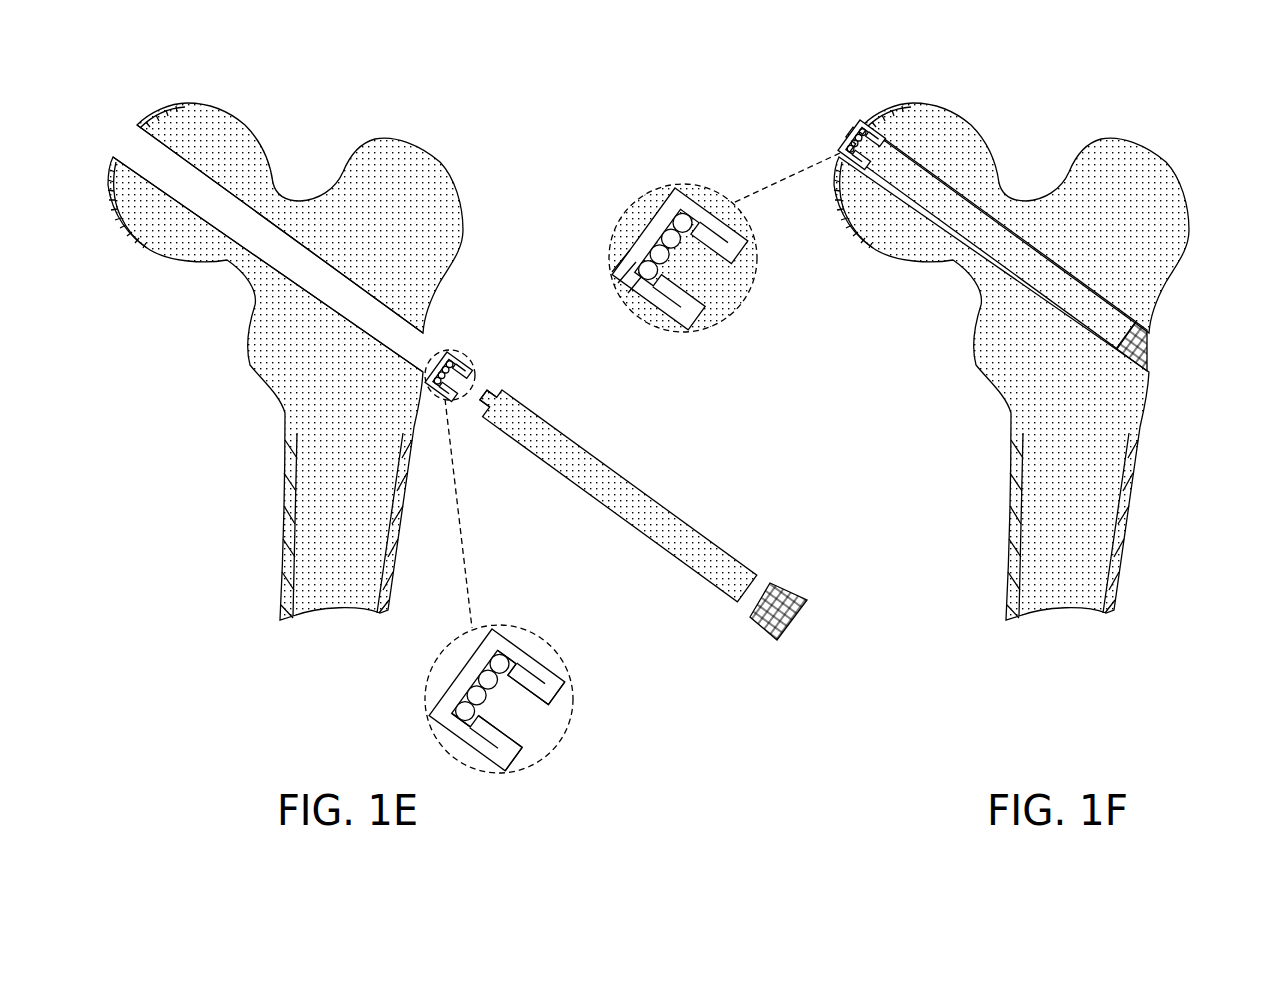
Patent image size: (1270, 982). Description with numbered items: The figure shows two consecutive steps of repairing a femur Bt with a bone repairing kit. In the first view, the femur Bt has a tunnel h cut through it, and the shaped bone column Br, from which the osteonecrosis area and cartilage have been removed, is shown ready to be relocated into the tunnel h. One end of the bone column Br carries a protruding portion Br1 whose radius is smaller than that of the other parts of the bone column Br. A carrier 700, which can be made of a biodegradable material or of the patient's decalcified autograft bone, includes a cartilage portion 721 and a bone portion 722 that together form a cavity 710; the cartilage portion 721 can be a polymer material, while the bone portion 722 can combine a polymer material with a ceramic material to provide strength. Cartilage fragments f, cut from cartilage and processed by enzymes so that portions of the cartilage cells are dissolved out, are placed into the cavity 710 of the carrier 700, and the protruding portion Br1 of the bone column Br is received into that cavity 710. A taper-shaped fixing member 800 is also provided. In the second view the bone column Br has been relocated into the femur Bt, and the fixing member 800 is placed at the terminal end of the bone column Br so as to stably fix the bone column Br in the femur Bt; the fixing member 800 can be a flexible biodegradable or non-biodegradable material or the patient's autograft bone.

In FIG. 1E, the femur Bt is at (420, 133).
In FIG. 1F, the femur Bt is at (1138, 132).
In FIG. 1E, the tunnel h is at (143, 150).
In FIG. 1E, the bone column Br is at (595, 467).
In FIG. 1F, the bone column Br is at (997, 247).
In FIG. 1E, the protruding portion Br1 is at (489, 394).
In FIG. 1E, the fixing member 800 is at (783, 590).
In FIG. 1F, the fixing member 800 is at (1142, 347).
In FIG. 1E, the carrier 700 is at (642, 595).
In FIG. 1F, the carrier 700 is at (840, 133).
In FIG. 1E, the cavity 710 is at (527, 712).
In FIG. 1E, the cartilage portion 721 is at (529, 657).
In FIG. 1E, the bone portion 722 is at (548, 680).
In FIG. 1E, the cartilage fragments f is at (477, 697).